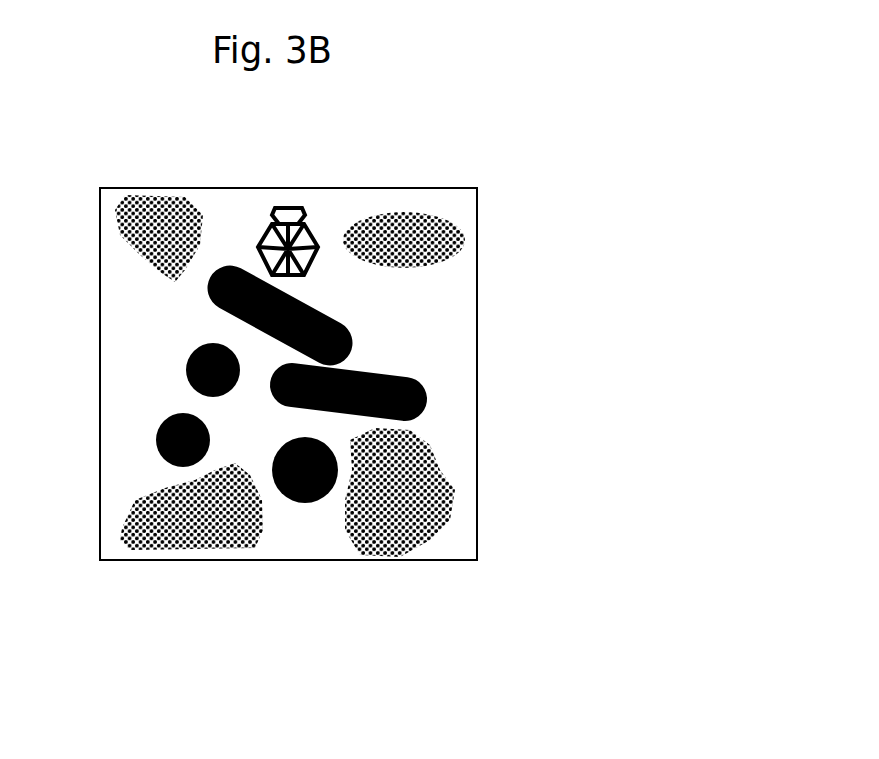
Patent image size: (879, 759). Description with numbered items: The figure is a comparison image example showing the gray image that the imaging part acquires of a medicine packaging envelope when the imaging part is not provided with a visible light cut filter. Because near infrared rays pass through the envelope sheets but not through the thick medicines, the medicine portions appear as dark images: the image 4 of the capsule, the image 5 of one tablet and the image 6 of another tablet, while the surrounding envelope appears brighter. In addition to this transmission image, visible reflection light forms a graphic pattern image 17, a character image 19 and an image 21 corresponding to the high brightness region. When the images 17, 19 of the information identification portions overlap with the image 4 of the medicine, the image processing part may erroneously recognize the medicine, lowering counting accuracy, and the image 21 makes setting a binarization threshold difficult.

The image of the capsule 4 is at (232, 267).
The image of the tablet 5 is at (303, 503).
The image of the tablet 6 is at (187, 368).
The graphic pattern image 17 is at (318, 220).
The character image 19 is at (368, 289).
The image corresponding to the high brightness region 21 is at (200, 203).